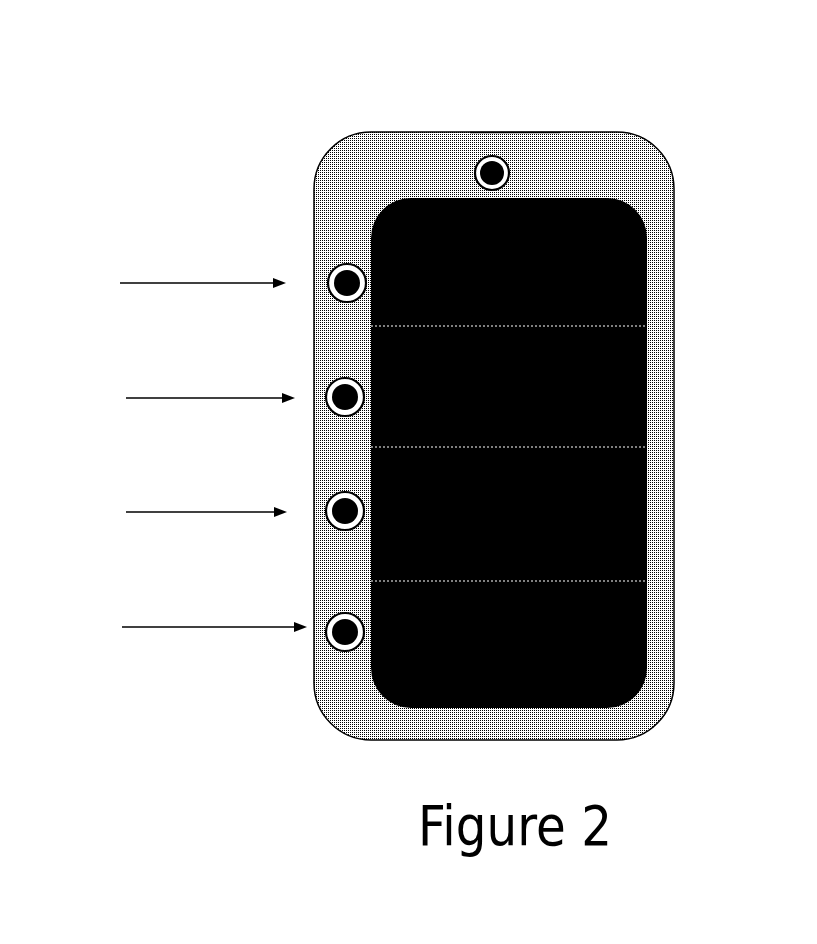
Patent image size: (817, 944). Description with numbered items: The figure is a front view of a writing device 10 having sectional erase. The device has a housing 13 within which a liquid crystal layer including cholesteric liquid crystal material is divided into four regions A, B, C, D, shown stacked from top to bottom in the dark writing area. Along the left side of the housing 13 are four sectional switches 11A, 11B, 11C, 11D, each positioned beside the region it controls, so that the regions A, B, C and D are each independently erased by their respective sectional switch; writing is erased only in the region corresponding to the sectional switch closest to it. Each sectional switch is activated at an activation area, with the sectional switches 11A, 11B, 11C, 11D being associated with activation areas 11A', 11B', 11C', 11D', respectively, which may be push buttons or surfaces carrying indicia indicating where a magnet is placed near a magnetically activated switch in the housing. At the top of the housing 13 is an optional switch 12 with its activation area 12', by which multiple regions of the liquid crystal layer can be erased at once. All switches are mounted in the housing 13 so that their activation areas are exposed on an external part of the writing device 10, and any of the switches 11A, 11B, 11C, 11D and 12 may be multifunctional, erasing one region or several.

The device 10 is at (378, 215).
The sectional switch 11A is at (169, 274).
The sectional switch 11B is at (173, 398).
The sectional switch 11C is at (169, 507).
The sectional switch 11D is at (179, 622).
The activation area 11A' is at (299, 273).
The activation area 11B' is at (297, 381).
The activation area 11C' is at (299, 492).
The activation area 11D' is at (300, 603).
The optional switch 12 is at (515, 98).
The top sensor 12' is at (457, 126).
The housing 13 is at (562, 165).
The region of the liquid crystal layer A is at (647, 275).
The region of the liquid crystal layer B is at (647, 384).
The region of the liquid crystal layer C is at (647, 505).
The region of the liquid crystal layer D is at (647, 631).